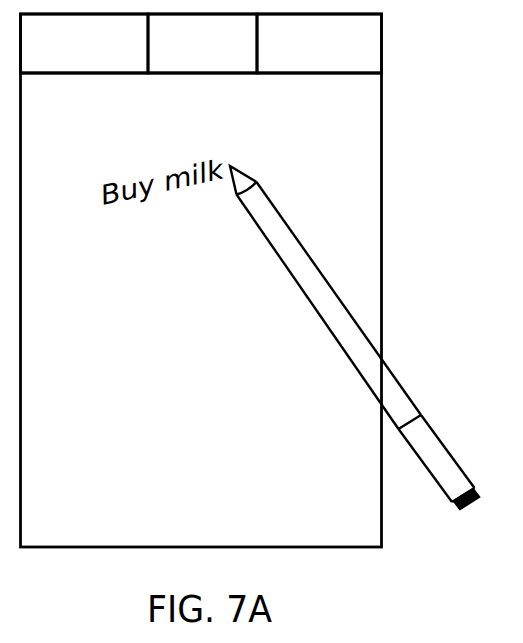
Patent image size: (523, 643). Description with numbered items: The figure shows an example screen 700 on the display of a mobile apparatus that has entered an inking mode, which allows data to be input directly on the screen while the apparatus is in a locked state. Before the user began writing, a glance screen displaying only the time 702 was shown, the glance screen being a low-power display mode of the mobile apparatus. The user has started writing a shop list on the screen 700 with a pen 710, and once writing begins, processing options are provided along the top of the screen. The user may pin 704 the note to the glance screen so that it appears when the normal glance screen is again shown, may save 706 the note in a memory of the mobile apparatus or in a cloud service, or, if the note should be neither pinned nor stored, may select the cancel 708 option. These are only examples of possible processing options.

The screen 700 is at (382, 50).
The time 702 is at (188, 309).
The pin to glance option 704 is at (100, 72).
The save option 706 is at (213, 72).
The cancel option 708 is at (322, 72).
The pen 710 is at (395, 383).